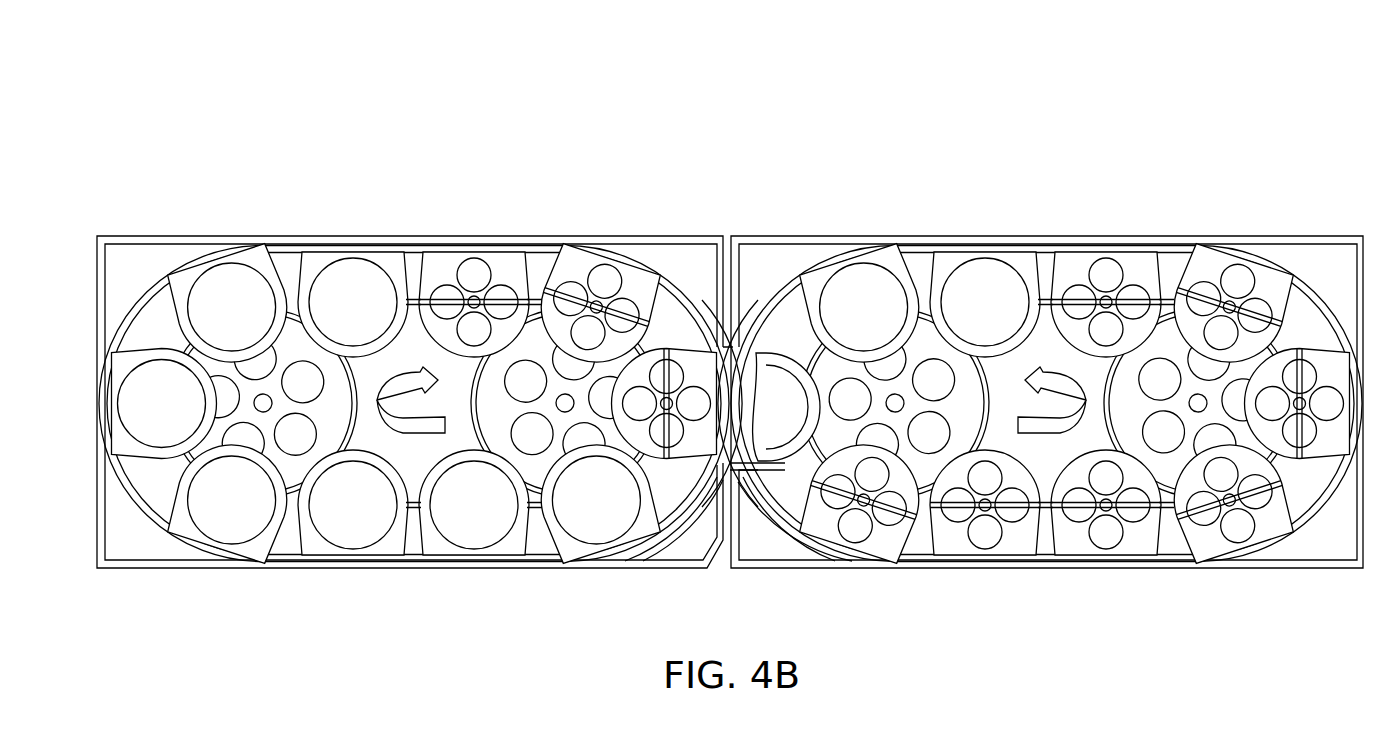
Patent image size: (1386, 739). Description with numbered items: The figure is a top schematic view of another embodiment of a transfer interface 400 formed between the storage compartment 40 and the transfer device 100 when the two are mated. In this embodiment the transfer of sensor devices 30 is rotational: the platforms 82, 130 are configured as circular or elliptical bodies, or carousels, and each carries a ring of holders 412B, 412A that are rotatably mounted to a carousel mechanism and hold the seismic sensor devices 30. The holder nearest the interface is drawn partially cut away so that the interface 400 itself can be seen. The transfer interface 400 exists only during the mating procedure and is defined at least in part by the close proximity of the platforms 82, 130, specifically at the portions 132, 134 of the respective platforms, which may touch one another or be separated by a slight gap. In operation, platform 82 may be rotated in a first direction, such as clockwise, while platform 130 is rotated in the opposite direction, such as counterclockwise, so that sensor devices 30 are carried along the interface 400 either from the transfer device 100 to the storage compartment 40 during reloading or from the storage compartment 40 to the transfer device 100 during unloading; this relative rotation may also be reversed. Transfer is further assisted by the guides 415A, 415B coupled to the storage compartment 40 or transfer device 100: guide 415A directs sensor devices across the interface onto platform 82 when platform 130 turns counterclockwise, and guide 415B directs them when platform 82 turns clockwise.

The storage compartment 40 is at (370, 148).
The transfer device 100 is at (1090, 136).
The platform 82 is at (286, 262).
The platform 130 is at (1177, 262).
The sensor device 30 is at (218, 325).
The holder 412B is at (442, 267).
The holder 412A is at (898, 263).
The transfer interface 400 is at (733, 344).
The portion of platform 132 is at (716, 365).
The portion of platform 134 is at (741, 414).
The guide 415B is at (695, 523).
The guide 415A is at (836, 557).